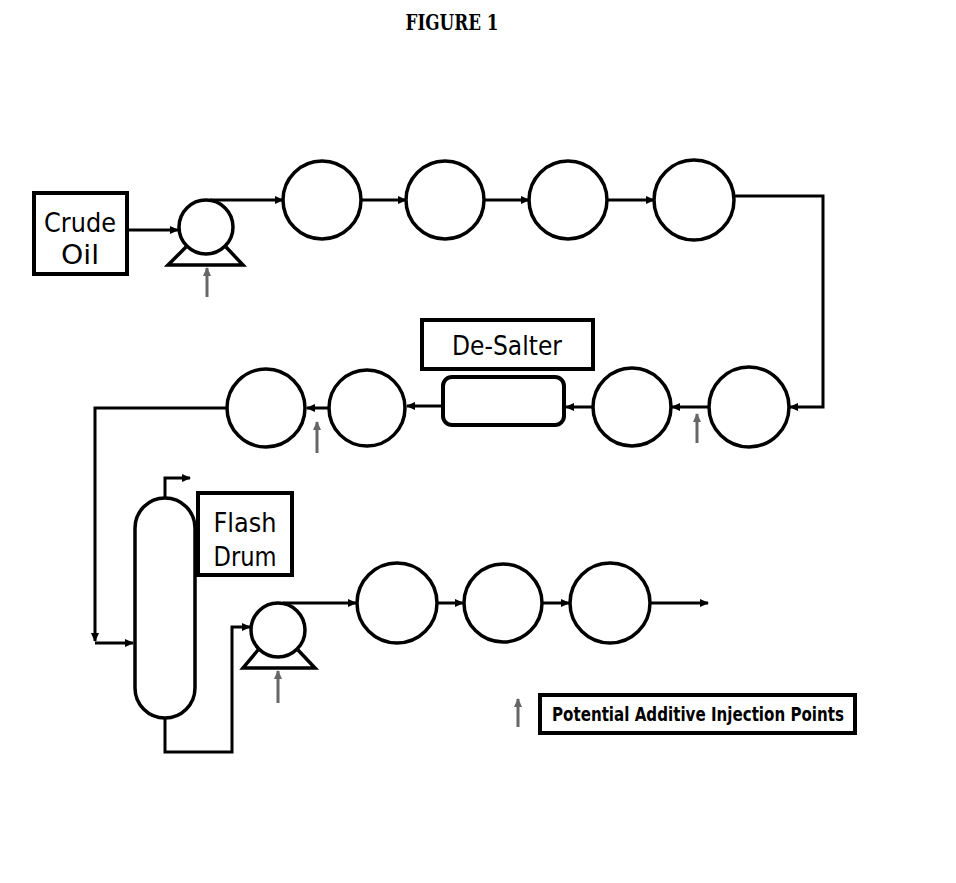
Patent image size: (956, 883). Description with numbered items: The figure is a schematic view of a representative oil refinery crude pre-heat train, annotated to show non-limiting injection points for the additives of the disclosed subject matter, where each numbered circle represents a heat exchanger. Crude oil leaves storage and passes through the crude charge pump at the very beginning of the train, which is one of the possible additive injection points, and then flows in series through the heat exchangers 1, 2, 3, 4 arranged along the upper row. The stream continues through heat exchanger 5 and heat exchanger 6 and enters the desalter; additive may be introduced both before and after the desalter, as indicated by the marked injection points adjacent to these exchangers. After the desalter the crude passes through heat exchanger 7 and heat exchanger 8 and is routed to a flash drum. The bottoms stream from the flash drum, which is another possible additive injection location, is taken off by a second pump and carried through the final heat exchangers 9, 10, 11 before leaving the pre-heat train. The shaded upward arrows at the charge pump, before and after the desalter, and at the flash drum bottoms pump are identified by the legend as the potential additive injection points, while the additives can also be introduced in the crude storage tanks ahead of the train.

The heat exchanger 1 is at (322, 200).
The heat exchanger 2 is at (445, 200).
The heat exchanger 3 is at (568, 200).
The heat exchanger 4 is at (694, 200).
The heat exchanger 5 is at (749, 407).
The heat exchanger 6 is at (632, 407).
The heat exchanger 7 is at (367, 408).
The heat exchanger 8 is at (266, 408).
The heat exchanger 9 is at (397, 603).
The heat exchanger 10 is at (503, 603).
The heat exchanger 11 is at (610, 603).